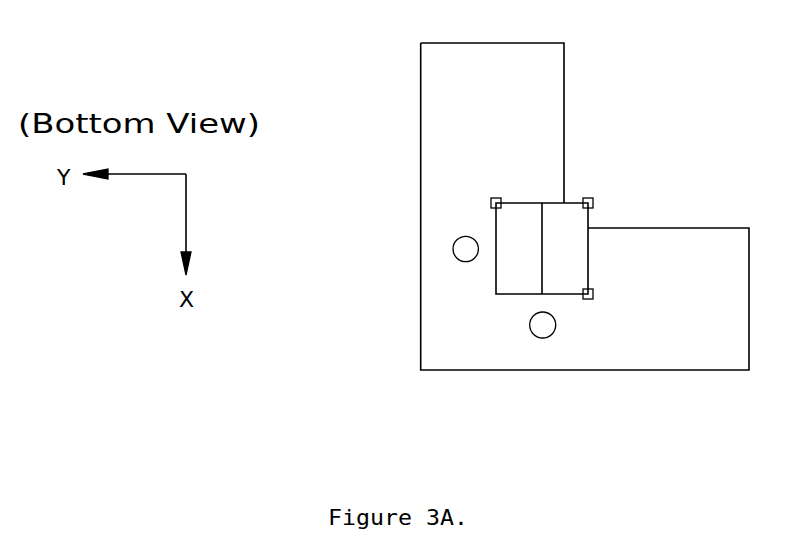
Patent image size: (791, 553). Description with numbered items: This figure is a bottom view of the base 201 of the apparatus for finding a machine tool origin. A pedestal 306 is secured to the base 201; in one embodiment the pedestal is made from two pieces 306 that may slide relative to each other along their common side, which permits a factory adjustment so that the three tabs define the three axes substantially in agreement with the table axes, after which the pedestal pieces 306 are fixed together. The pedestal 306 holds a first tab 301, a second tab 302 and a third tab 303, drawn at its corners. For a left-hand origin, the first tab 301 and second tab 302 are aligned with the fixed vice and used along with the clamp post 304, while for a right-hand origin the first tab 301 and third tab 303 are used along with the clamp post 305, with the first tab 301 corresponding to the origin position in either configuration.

The base 201 is at (543, 82).
The first tab 301 is at (589, 200).
The second tab 302 is at (591, 292).
The third tab 303 is at (492, 203).
The clamp post 304 is at (465, 252).
The clamp post 305 is at (545, 328).
The pedestal 306 is at (568, 267).